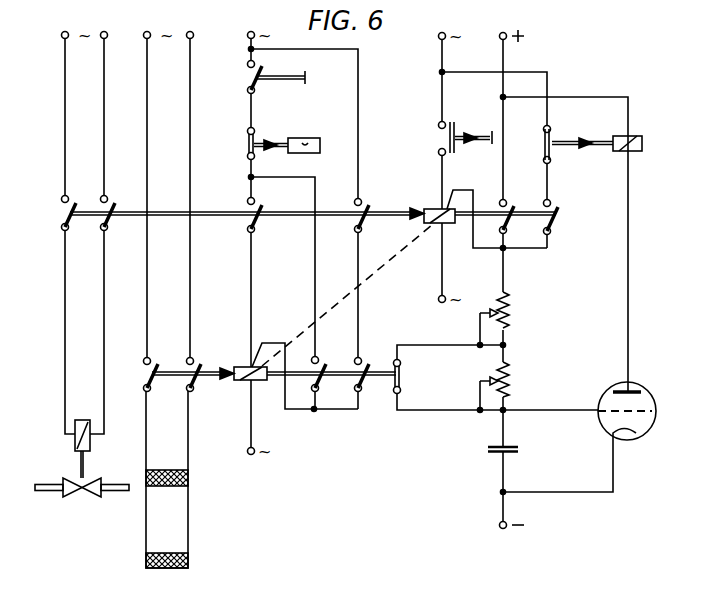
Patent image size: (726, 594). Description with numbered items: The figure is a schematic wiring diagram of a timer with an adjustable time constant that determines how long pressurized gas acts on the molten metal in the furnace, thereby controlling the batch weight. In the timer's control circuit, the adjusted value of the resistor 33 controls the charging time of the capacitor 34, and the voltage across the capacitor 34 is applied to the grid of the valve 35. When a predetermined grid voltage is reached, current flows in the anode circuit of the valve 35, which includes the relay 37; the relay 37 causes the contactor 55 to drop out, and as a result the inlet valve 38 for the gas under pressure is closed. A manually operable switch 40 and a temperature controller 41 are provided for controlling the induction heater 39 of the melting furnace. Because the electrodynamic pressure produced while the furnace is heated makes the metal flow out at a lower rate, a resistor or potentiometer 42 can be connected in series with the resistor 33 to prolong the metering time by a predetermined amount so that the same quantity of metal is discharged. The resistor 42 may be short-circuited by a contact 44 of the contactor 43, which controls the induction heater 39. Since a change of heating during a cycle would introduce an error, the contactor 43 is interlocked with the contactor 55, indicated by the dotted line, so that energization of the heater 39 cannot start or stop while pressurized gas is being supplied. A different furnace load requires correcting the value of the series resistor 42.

The resistor 33 is at (510, 299).
The capacitor 34 is at (487, 449).
The valve 35 is at (646, 396).
The relay 37 is at (643, 143).
The inlet valve 38 is at (82, 447).
The induction heater 39 is at (182, 513).
The manually operable switch 40 is at (254, 75).
The temperature controller 41 is at (308, 128).
The resistor 42 is at (510, 369).
The contactor 43 is at (247, 366).
The contact 44 is at (402, 377).
The contactor 55 is at (441, 209).